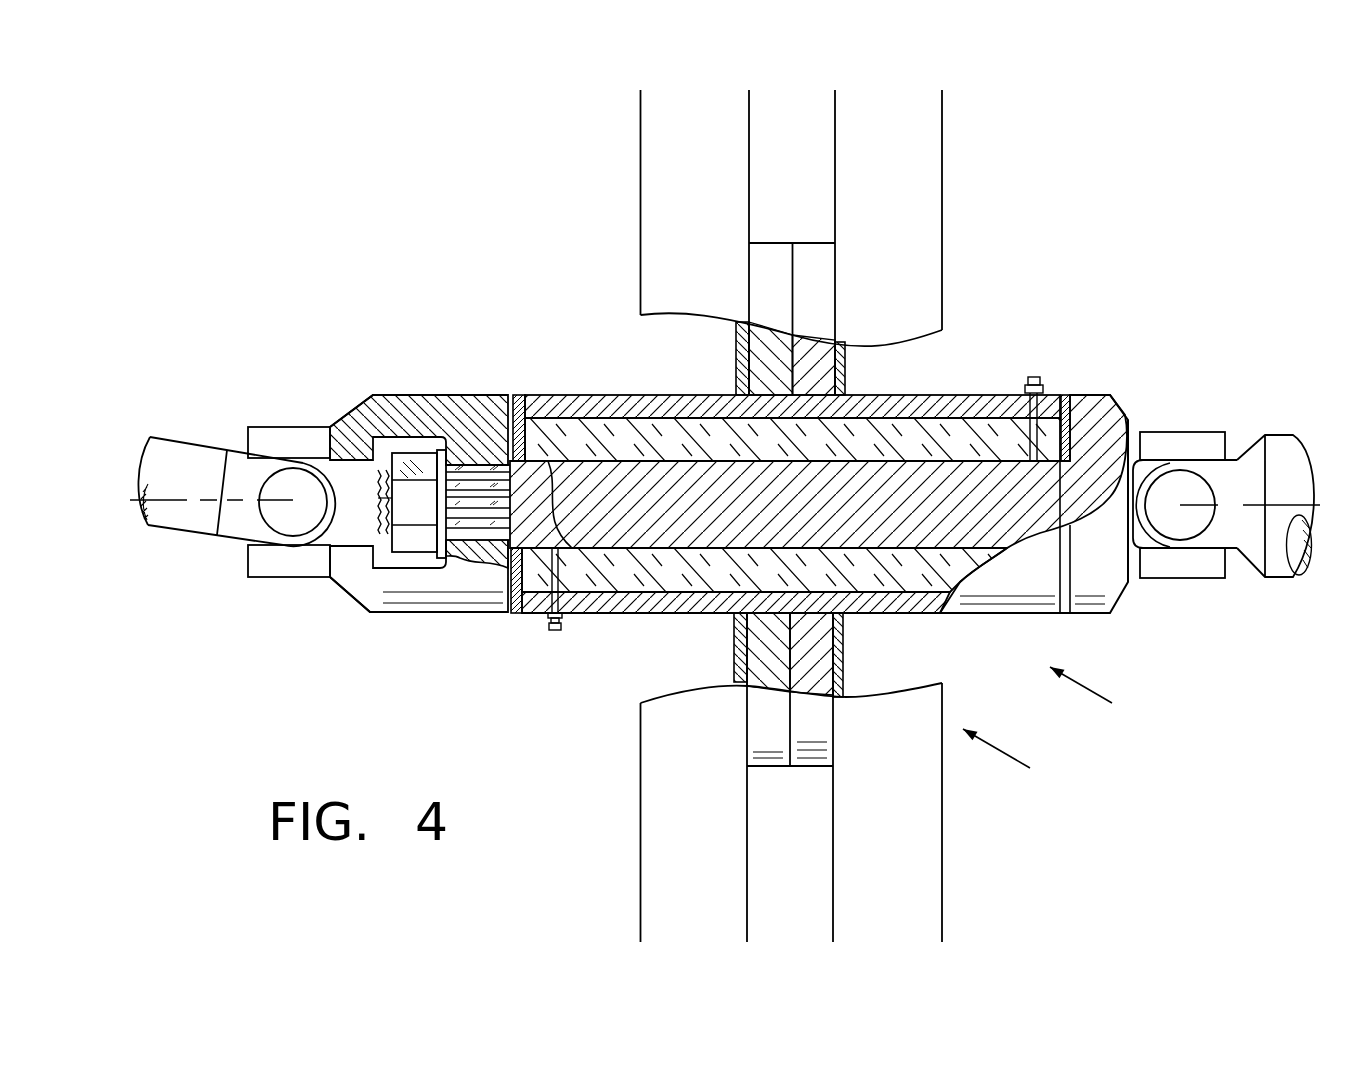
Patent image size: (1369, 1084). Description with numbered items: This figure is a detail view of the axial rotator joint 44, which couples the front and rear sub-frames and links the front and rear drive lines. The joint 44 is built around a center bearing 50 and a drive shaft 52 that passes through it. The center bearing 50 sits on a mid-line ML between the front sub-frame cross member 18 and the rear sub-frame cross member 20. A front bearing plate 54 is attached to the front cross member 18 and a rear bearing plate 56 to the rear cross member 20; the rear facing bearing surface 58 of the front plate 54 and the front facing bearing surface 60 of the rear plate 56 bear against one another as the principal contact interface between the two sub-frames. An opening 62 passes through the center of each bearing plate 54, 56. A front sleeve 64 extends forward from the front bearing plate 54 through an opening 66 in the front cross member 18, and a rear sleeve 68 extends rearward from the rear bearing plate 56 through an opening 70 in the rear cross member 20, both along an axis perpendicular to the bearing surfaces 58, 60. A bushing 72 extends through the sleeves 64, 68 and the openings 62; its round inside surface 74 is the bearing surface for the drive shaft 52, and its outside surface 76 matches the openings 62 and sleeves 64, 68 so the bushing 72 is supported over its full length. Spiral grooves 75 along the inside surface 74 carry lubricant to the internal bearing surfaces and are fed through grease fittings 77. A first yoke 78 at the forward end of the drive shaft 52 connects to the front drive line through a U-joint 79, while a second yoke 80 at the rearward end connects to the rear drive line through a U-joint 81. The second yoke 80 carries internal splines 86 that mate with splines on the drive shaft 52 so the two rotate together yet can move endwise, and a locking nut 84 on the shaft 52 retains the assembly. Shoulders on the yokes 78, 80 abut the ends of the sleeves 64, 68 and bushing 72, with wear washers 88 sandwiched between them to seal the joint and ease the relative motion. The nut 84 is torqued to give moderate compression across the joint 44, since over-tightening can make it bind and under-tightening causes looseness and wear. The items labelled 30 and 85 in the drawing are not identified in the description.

The front sub-frame cross member 18 is at (942, 840).
The rear sub-frame cross member 20 is at (641, 825).
The rod end 30 is at (1283, 443).
The axial rotator joint 44 is at (1015, 758).
The center bearing 50 is at (1101, 696).
The drive shaft 52 is at (1020, 504).
The front bearing plate 54 is at (811, 246).
The rear bearing plate 56 is at (768, 246).
The rear facing bearing surface 58 is at (792, 280).
The front facing bearing surface 60 is at (792, 297).
The opening 62 is at (737, 395).
The front sleeve 64 is at (983, 395).
The opening 66 is at (940, 613).
The rear sleeve 68 is at (537, 393).
The opening 70 is at (637, 613).
The bushing 72 is at (950, 452).
The inside surface 74 is at (608, 445).
The spiral grooves 75 is at (723, 548).
The outside surface 76 is at (577, 415).
The grease fittings 77 is at (1033, 376).
The first yoke 78 is at (1093, 613).
The U-joint 79 is at (1187, 560).
The second yoke 80 is at (443, 398).
The U-joint 81 is at (298, 452).
The locking nut 84 is at (403, 507).
The threaded end 85 is at (478, 463).
The internal splines 86 is at (490, 495).
The wear washers 88 is at (1066, 395).
The mid-line ML is at (180, 503).